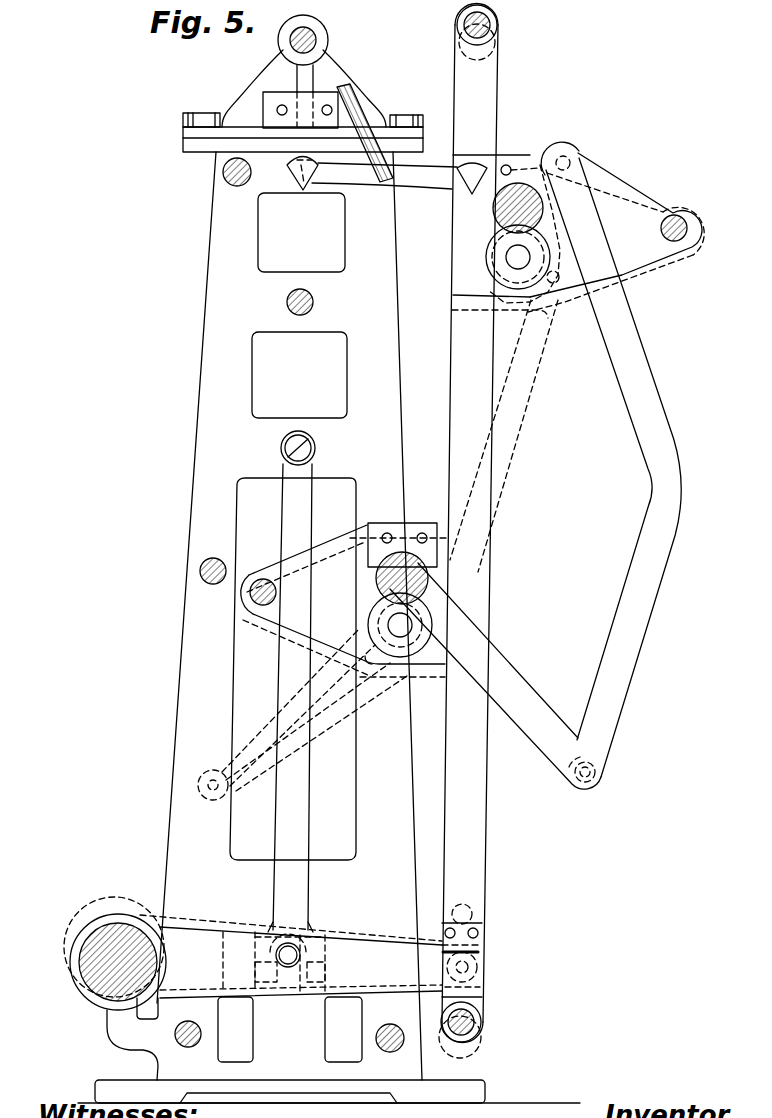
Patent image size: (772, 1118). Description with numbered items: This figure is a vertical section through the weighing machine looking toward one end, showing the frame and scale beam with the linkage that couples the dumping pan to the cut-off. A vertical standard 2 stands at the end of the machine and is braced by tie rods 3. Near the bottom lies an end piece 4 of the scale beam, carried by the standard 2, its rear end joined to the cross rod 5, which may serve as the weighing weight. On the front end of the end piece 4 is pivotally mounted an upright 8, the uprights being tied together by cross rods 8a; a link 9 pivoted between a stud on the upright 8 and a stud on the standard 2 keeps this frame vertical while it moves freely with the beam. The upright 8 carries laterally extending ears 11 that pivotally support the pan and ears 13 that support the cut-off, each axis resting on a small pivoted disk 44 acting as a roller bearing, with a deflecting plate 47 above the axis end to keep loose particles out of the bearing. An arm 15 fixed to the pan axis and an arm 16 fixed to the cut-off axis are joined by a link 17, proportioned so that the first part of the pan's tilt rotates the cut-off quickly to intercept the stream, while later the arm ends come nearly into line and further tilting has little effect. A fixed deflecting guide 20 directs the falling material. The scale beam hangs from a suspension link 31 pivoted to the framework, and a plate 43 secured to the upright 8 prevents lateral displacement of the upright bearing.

The vertical standard 2 is at (222, 300).
The tie rod 3 is at (222, 174).
The end piece of scale beam 4 is at (440, 955).
The cross rod 5 is at (93, 958).
The upright 8 is at (478, 102).
The cross rod 8a is at (490, 25).
The link 9 is at (367, 182).
The laterally extending ear 11 is at (343, 600).
The laterally extending ear 13 is at (616, 227).
The arm 15 is at (508, 669).
The arm 16 is at (578, 162).
The link 17 is at (636, 390).
The fixed deflecting guide 20 is at (357, 110).
The link 31 is at (300, 515).
The plate 43 is at (483, 940).
The disk 44 is at (500, 258).
The deflecting plate 47 is at (412, 532).